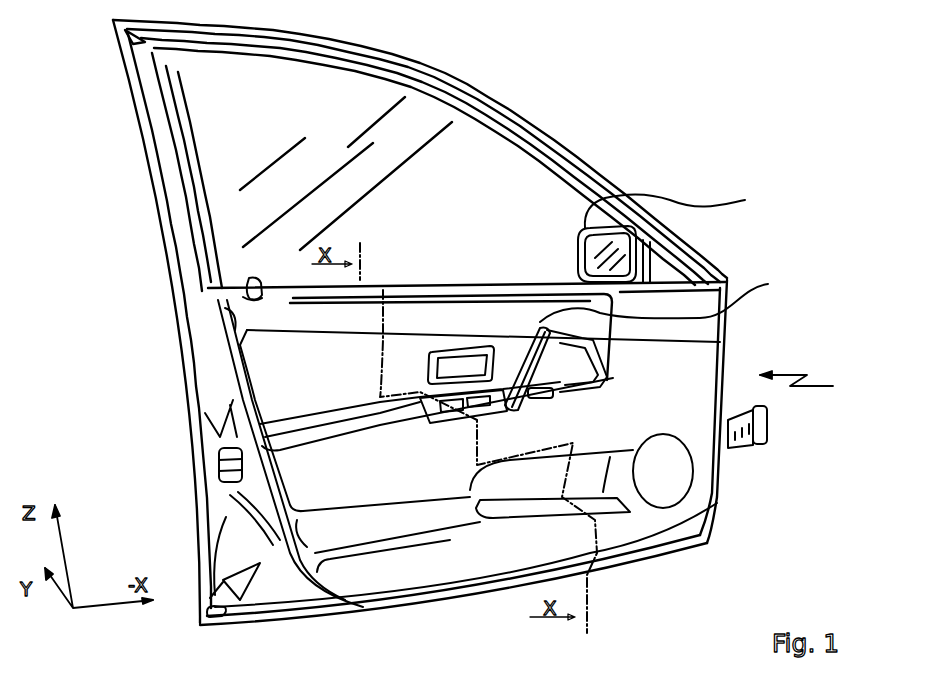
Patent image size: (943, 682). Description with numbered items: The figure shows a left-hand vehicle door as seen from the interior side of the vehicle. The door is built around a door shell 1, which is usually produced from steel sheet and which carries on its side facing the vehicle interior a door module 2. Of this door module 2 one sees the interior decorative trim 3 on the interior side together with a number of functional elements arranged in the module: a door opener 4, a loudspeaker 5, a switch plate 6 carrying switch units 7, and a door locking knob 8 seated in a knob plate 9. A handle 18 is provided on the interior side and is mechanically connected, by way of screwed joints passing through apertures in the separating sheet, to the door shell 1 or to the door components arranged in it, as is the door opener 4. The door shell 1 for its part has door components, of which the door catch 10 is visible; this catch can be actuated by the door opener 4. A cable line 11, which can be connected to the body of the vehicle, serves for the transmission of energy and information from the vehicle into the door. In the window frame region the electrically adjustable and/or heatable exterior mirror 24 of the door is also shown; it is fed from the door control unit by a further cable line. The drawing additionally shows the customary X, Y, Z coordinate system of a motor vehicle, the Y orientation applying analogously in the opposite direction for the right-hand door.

The door shell 1 is at (548, 151).
The door module 2 is at (805, 385).
The interior decorative trim 3 is at (683, 370).
The door opener 4 is at (463, 357).
The loudspeaker 5 is at (665, 478).
The switch plate 6 is at (413, 403).
The switch units 7 is at (543, 394).
The door locking knob 8 is at (247, 283).
The knob plate 9 is at (248, 296).
The door catch 10 is at (218, 458).
The cable line 11 is at (768, 417).
The handle 18 is at (669, 331).
The exterior mirror 24 is at (663, 235).